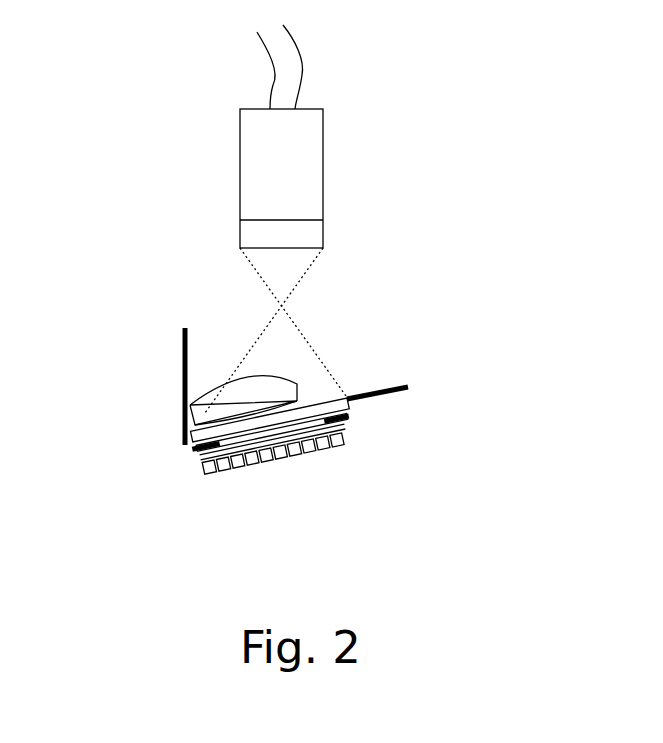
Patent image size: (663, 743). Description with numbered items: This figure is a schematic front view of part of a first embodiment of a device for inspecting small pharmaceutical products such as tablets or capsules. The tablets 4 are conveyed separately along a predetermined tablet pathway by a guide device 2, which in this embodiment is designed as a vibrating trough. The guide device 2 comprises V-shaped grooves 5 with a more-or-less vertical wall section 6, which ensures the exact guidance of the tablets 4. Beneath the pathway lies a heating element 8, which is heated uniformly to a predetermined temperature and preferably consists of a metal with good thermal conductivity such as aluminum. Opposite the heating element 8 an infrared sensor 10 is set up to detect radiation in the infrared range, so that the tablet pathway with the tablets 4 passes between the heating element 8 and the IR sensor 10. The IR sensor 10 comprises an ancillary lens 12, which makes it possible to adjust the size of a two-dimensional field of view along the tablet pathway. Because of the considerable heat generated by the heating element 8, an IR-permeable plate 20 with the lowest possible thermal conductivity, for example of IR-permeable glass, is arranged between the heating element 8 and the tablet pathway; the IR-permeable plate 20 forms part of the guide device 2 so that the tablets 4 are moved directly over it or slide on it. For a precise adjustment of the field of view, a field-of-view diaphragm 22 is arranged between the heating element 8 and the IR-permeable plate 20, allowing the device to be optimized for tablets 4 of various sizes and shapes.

The guide device 2 is at (409, 386).
The tablets 4 is at (250, 401).
The V-shaped grooves 5 is at (340, 336).
The vertical wall section 6 is at (183, 358).
The heating element 8 is at (254, 457).
The infrared sensor 10 is at (295, 192).
The ancillary lens 12 is at (268, 238).
The IR-permeable plate 20 is at (198, 456).
The field-of-view diaphragm 22 is at (350, 418).